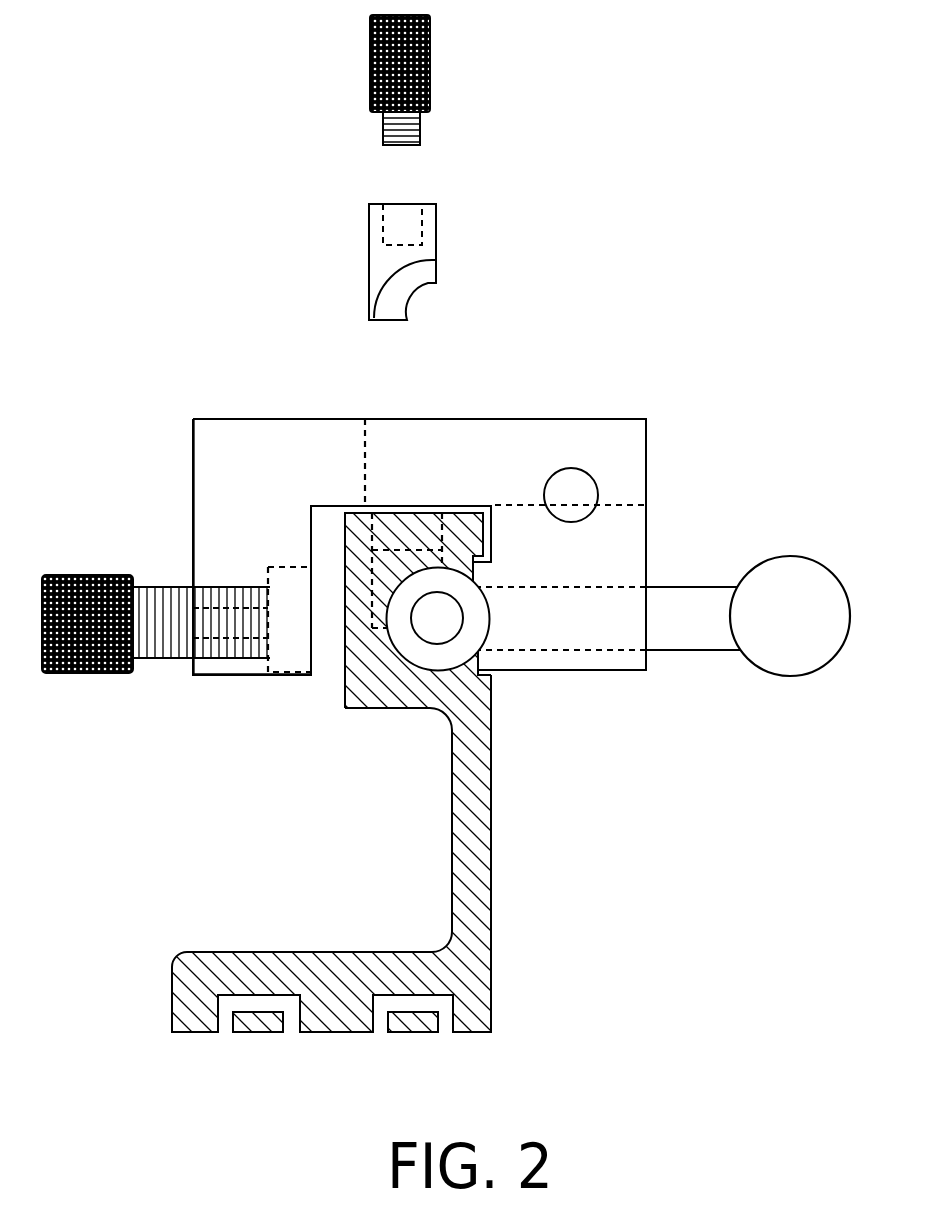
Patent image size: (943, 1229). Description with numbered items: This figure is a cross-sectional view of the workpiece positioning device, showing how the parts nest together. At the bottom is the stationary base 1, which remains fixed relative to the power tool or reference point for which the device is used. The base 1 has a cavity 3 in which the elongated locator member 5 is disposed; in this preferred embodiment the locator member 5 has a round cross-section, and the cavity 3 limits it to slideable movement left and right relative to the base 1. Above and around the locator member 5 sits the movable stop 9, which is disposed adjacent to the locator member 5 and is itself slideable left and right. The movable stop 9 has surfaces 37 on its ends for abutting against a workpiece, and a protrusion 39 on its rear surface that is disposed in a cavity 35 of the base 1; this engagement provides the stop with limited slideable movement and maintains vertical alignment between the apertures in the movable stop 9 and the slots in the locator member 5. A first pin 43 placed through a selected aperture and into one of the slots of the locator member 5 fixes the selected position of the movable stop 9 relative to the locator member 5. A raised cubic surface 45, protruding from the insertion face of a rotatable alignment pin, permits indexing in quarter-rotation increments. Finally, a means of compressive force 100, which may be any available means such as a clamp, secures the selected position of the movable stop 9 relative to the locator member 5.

The stationary base 1 is at (492, 928).
The cavity 3 is at (413, 667).
The locator member 5 is at (452, 618).
The movable stop 9 is at (578, 418).
The cavity 35 is at (473, 512).
The surfaces 37 is at (232, 465).
The protrusion 39 is at (473, 657).
The first pin 43 is at (682, 585).
The raised cubic surface 45 is at (422, 140).
The means of compressive force 100 is at (173, 658).